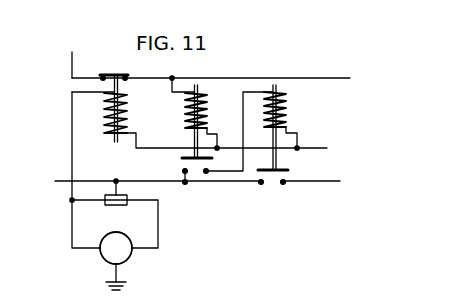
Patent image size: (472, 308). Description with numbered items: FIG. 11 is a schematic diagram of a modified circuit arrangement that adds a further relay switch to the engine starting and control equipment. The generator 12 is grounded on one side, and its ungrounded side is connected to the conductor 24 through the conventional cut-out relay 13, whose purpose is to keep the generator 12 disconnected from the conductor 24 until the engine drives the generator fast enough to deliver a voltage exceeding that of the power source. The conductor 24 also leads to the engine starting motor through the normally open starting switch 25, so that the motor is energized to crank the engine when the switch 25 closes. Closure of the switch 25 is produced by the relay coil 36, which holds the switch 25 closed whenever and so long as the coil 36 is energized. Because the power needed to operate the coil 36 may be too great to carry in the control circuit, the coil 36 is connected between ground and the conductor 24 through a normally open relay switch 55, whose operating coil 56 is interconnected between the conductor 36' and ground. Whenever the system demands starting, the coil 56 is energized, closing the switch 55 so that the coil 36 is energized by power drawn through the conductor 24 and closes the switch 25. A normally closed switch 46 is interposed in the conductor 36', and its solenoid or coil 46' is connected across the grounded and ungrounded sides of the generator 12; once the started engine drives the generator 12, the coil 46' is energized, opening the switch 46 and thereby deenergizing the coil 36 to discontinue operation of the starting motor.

The normally closed switch 46 is at (110, 98).
The solenoid or coil 46' is at (215, 120).
The conductor 36' is at (211, 75).
The operating coil 56 is at (205, 111).
The relay coil 36 is at (289, 127).
The normally open relay switch 55 is at (195, 162).
The starting switch 25 is at (273, 176).
The conductor 24 is at (84, 181).
The cut-out relay 13 is at (119, 205).
The generator 12 is at (124, 256).